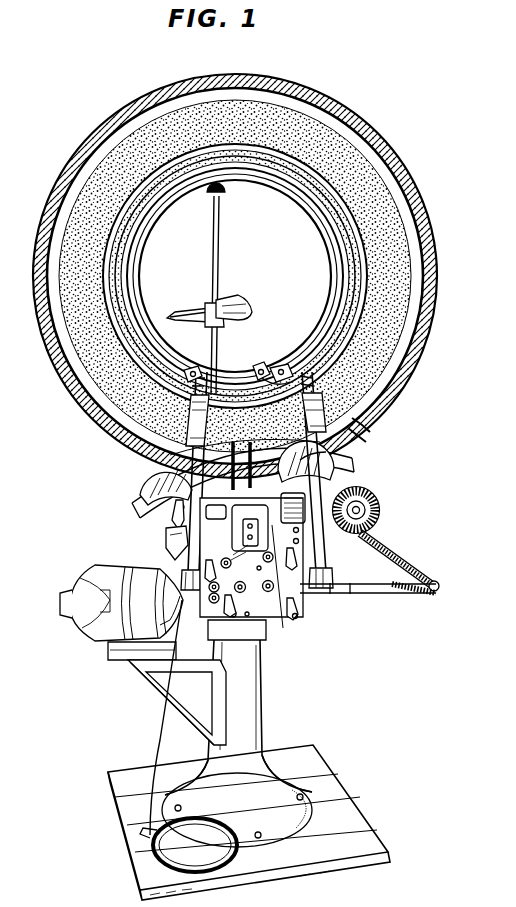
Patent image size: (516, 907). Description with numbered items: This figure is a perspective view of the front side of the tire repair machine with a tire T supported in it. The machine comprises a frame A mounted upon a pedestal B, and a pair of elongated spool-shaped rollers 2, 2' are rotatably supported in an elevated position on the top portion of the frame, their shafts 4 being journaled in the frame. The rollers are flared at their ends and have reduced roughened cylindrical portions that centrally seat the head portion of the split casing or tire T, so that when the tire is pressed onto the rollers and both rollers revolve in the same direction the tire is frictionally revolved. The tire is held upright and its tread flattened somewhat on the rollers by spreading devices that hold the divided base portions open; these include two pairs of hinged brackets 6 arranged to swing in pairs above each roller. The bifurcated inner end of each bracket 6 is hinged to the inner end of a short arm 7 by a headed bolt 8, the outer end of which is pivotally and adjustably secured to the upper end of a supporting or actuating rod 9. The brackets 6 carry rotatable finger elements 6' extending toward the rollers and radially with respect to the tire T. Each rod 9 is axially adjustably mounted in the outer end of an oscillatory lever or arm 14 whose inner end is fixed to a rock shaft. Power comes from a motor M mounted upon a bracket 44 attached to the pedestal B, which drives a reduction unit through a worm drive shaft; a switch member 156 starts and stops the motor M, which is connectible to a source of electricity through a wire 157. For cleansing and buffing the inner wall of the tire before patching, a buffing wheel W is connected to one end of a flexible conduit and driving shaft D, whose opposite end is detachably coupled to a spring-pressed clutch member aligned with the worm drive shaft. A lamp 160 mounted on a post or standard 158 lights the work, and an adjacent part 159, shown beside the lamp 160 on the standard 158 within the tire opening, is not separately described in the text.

The tire T is at (437, 305).
The post or standard 158 is at (218, 253).
The pointer 159 is at (210, 306).
The lamp 160 is at (246, 305).
The spool-shaped roller 2 is at (233, 478).
The spool-shaped roller 2' is at (307, 460).
The supporting or actuating rod 9 is at (190, 563).
The hinged bracket 6 is at (227, 363).
The finger element 6' is at (279, 363).
The short arm 7 is at (370, 428).
The headed bolt 8 is at (366, 440).
The frame A is at (302, 606).
The switch member 156 is at (284, 588).
The roller shaft 4 is at (178, 507).
The oscillatory lever or arm 14 is at (166, 534).
The buffing wheel W is at (372, 512).
The flexible conduit and driving shaft D is at (405, 554).
The pedestal B is at (262, 692).
The motor M is at (92, 632).
The bracket 44 is at (164, 682).
The wire 157 is at (157, 732).